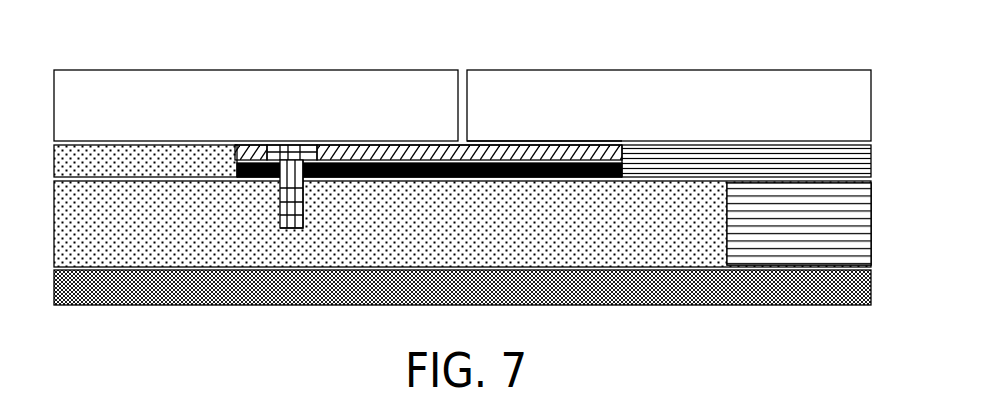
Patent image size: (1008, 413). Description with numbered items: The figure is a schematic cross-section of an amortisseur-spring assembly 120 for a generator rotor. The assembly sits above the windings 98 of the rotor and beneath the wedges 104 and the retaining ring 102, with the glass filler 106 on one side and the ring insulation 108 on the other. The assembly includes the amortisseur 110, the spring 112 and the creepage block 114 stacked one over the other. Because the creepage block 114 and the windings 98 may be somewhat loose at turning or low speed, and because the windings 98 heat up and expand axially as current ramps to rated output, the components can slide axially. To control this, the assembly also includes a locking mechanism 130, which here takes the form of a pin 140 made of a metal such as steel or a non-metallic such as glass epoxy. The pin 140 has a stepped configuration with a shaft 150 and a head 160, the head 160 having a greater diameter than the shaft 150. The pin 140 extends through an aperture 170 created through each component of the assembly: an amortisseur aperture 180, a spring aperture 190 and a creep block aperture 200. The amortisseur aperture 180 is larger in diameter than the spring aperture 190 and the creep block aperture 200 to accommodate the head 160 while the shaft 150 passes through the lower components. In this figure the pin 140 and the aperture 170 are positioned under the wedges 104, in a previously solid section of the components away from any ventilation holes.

The amortisseur-spring assembly 120 is at (128, 40).
The wedges 104 is at (192, 70).
The retaining ring 102 is at (820, 70).
The amortisseur 110 is at (474, 141).
The spring 112 is at (498, 165).
The glass filler 106 is at (53, 160).
The ring insulation 108 is at (872, 162).
The head 160 is at (302, 144).
The aperture 170 is at (320, 139).
The amortisseur aperture 180 is at (318, 157).
The spring aperture 190 is at (338, 178).
The creepage block 114 is at (698, 248).
The locking mechanism 130 is at (278, 233).
The pin 140 is at (278, 233).
The shaft 150 is at (290, 230).
The creep block aperture 200 is at (303, 222).
The windings 98 is at (146, 305).